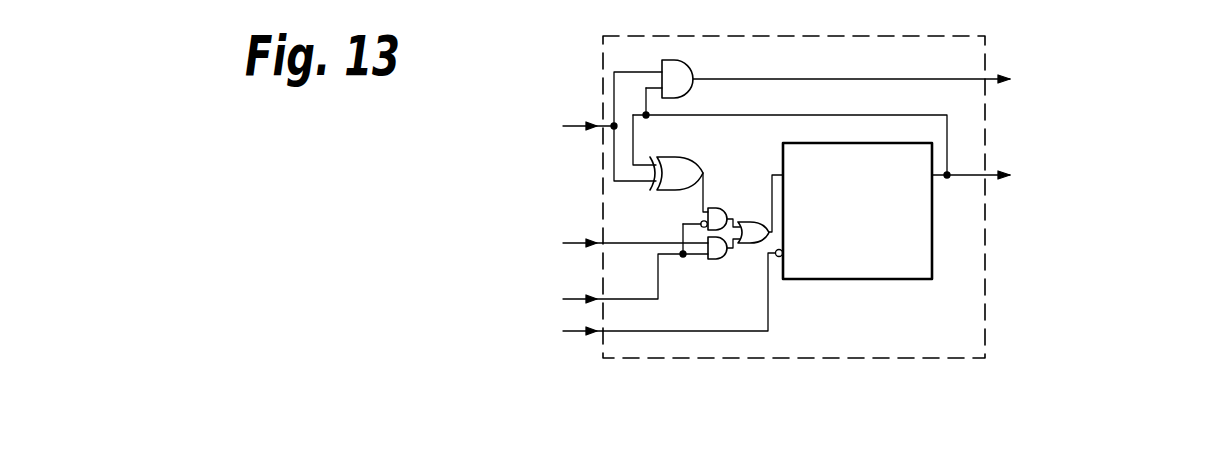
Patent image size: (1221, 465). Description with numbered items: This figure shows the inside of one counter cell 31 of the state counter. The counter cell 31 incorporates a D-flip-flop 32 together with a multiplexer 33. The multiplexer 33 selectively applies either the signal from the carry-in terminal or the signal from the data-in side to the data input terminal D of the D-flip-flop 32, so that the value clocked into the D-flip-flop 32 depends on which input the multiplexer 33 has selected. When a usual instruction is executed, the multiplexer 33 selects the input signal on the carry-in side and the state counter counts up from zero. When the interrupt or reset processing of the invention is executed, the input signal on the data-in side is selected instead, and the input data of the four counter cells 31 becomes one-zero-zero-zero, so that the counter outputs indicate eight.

The counter cell 31 is at (844, 36).
The D-flip-flop 32 is at (933, 238).
The multiplexer 33 is at (733, 258).